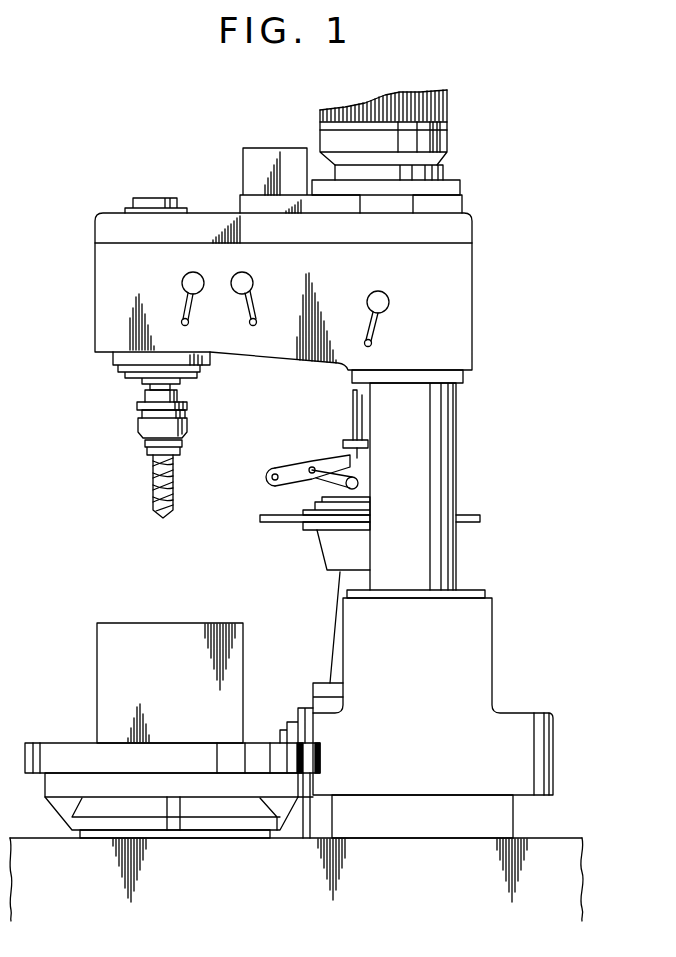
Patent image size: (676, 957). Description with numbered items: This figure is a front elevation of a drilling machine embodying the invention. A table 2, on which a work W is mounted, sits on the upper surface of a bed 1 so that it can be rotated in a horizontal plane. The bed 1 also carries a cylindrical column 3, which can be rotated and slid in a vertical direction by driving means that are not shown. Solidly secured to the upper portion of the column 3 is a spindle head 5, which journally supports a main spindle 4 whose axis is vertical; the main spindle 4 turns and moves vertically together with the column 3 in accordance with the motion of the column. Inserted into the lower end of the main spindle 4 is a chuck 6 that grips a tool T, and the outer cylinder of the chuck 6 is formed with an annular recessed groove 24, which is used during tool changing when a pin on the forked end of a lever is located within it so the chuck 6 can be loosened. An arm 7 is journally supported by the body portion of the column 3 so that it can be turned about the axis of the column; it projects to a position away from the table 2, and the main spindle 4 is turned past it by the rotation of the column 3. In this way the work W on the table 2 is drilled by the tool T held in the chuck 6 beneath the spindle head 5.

The bed 1 is at (555, 851).
The table 2 is at (80, 752).
The column 3 is at (432, 440).
The main spindle 4 is at (142, 383).
The spindle head 5 is at (107, 303).
The chuck 6 is at (138, 425).
The arm 7 is at (492, 656).
The annular recessed groove 24 is at (187, 409).
The tool T is at (155, 485).
The work W is at (195, 632).